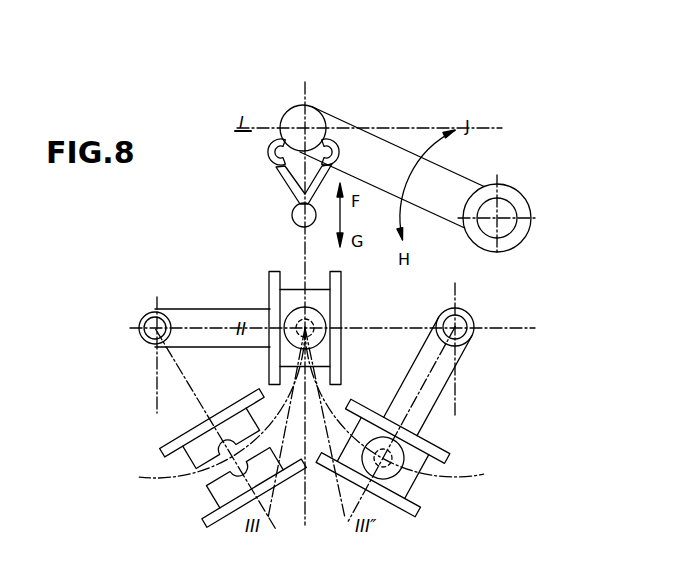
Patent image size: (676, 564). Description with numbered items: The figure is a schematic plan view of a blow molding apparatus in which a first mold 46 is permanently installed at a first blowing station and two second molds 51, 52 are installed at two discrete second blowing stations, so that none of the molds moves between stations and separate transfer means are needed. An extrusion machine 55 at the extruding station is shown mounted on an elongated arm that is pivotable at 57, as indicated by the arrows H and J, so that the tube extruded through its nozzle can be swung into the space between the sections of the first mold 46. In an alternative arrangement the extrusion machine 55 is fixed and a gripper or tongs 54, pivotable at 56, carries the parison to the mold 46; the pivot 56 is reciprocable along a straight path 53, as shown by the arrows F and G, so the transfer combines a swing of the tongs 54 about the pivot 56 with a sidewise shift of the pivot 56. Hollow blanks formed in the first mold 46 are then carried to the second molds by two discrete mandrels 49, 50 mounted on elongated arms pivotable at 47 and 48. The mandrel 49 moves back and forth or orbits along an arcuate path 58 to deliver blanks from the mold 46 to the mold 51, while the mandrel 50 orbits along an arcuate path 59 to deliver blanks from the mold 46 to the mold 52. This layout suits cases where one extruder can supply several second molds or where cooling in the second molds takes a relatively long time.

The first mold 46 is at (331, 357).
The pivot 47 is at (163, 312).
The pivot 48 is at (467, 337).
The mandrel 49 is at (318, 320).
The mandrel 50 is at (383, 470).
The second mold 51 is at (219, 400).
The second mold 52 is at (337, 484).
The straight path 53 is at (300, 243).
The gripper or tongs 54 is at (278, 170).
The extrusion machine 55 is at (295, 115).
The pivot 56 is at (298, 222).
The pivot 57 is at (498, 222).
The arcuate path 58 is at (140, 477).
The arcuate path 59 is at (483, 473).